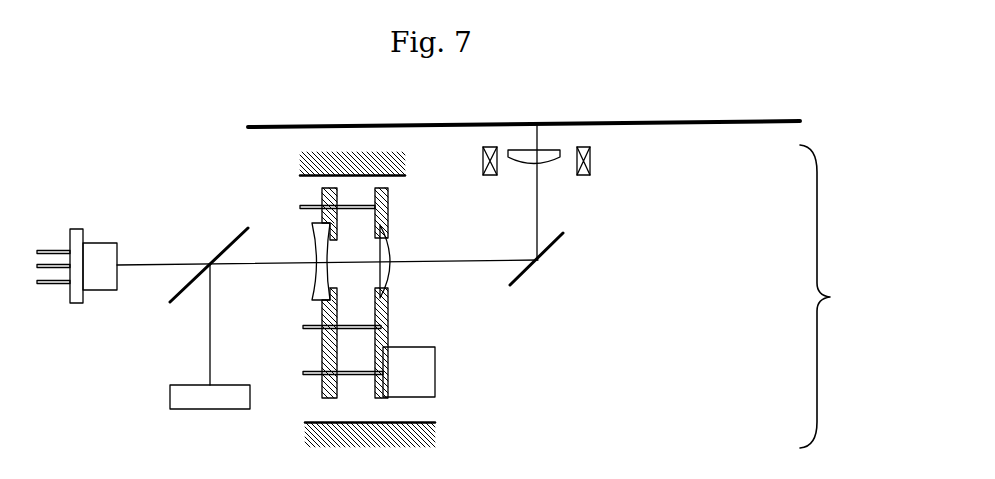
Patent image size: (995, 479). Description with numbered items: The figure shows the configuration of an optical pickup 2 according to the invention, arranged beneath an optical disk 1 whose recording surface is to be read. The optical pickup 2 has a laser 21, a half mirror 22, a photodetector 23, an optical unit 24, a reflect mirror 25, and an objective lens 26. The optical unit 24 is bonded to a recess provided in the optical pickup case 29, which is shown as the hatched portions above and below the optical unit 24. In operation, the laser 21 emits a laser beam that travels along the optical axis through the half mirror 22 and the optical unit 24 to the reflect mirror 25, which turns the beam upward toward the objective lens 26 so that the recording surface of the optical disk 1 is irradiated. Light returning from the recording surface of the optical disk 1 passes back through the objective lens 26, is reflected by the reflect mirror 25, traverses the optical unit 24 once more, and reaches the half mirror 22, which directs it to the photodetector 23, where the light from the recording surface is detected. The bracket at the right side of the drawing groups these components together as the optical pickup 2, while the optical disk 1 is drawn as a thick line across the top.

The optical disk 1 is at (703, 120).
The optical pickup 2 is at (826, 296).
The laser 21 is at (84, 230).
The half mirror 22 is at (230, 240).
The photodetector 23 is at (170, 397).
The optical unit 24 is at (388, 342).
The reflect mirror 25 is at (553, 247).
The objective lens 26 is at (546, 162).
The optical pickup case 29 is at (300, 165).